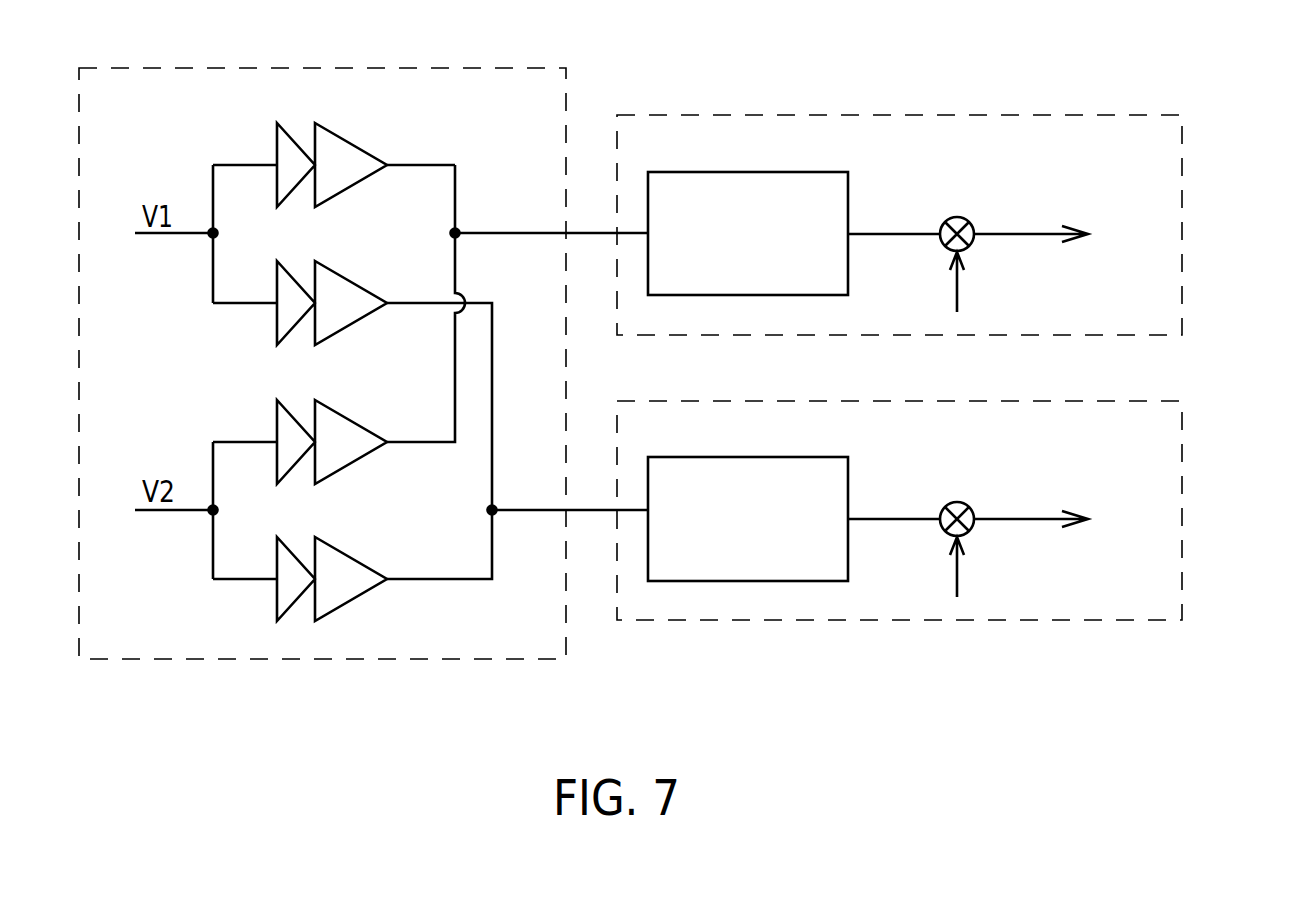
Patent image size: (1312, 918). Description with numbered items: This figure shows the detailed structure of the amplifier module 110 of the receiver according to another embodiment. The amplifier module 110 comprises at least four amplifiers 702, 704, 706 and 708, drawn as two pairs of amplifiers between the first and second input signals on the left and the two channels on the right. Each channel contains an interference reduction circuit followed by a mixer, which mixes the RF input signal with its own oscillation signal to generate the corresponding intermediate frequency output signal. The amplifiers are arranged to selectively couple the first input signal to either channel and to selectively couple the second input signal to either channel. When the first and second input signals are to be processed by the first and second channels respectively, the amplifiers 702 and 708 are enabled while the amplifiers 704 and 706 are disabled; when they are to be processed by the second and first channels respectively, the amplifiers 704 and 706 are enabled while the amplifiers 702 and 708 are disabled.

The amplifier module 110 is at (338, 68).
The amplifier 702 is at (348, 141).
The amplifier 704 is at (348, 278).
The amplifier 706 is at (348, 418).
The amplifier 708 is at (348, 553).